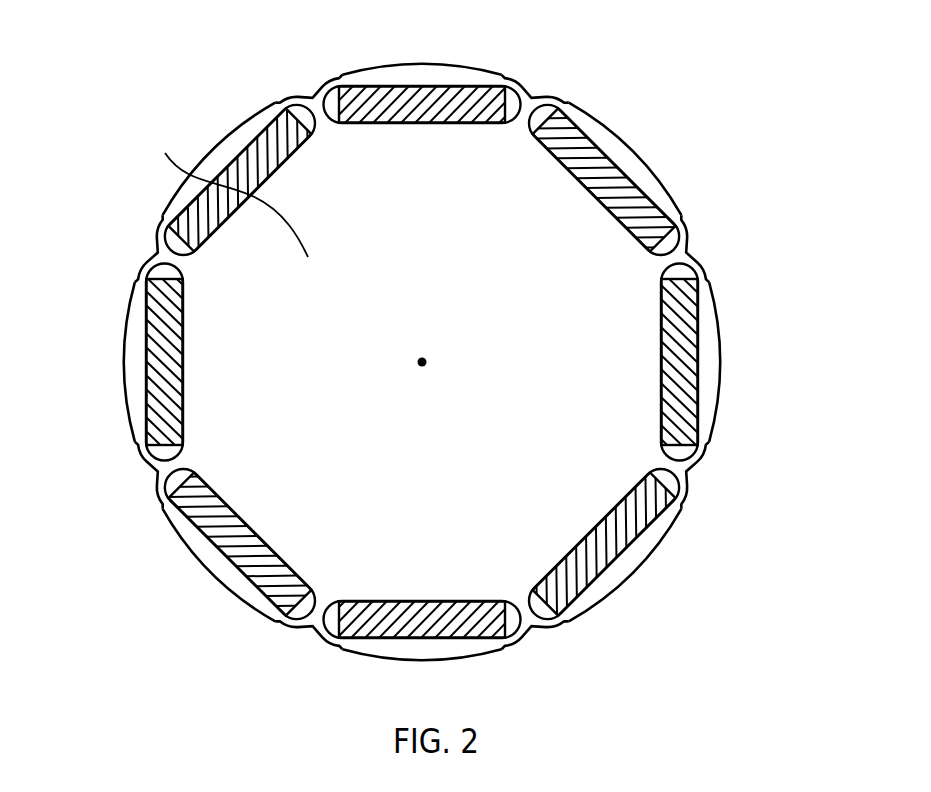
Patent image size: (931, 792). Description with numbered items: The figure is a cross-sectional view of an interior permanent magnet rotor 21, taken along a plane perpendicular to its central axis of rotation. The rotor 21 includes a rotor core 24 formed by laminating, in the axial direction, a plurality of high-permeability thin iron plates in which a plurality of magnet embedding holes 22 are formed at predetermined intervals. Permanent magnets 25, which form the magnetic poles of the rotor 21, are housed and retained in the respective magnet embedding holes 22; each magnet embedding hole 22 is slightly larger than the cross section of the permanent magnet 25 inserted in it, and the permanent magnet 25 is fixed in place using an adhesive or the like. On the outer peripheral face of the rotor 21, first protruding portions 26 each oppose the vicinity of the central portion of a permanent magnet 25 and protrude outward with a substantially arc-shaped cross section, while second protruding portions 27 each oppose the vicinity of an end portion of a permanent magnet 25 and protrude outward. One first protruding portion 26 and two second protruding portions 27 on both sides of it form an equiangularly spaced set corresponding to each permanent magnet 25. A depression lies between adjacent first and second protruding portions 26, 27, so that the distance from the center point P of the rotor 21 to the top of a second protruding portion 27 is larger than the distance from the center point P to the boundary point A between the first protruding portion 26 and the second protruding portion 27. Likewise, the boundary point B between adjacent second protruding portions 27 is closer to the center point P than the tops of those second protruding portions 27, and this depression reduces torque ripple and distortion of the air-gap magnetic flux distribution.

The rotor 21 is at (208, 106).
The magnet embedding hole 22 is at (533, 123).
The rotor core 24 is at (225, 192).
The permanent magnet 25 is at (603, 167).
The first protruding portion 26 is at (647, 167).
The second protruding portion 27 is at (543, 88).
The boundary point A is at (340, 82).
The boundary point B is at (309, 93).
The center point P is at (420, 368).